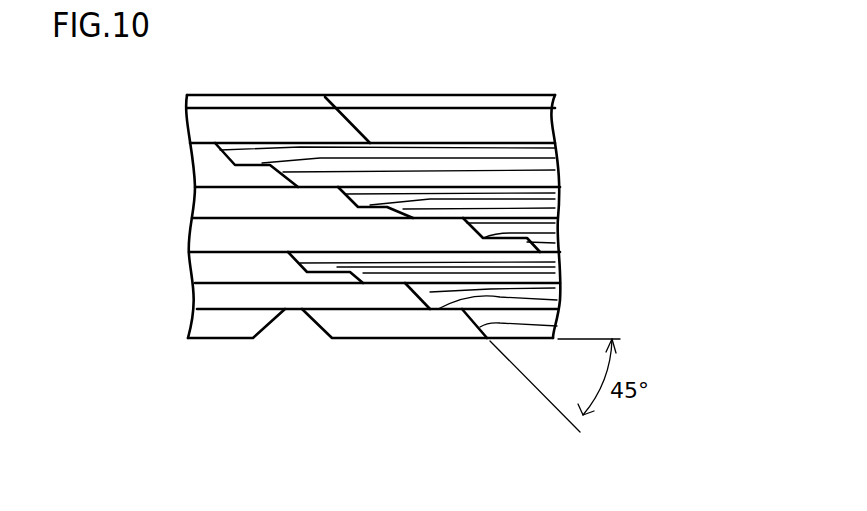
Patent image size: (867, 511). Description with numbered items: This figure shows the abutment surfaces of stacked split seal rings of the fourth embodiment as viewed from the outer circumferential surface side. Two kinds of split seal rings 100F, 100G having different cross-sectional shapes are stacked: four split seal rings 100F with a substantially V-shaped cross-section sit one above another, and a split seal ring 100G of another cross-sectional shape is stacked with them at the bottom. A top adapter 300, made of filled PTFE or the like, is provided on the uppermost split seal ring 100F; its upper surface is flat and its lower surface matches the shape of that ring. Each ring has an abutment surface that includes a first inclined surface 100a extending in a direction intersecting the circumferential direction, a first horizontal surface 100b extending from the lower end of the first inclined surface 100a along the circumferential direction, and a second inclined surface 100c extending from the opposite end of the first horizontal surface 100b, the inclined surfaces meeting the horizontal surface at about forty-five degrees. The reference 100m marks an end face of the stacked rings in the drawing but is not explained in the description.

The top adapter 300 is at (230, 112).
The end face of laminate 100m is at (362, 112).
The split seal ring 100F is at (210, 168).
The split seal ring 100G is at (210, 297).
The first inclined surface 100a is at (555, 148).
The first horizontal surface 100b is at (555, 158).
The second inclined surface 100c is at (555, 170).